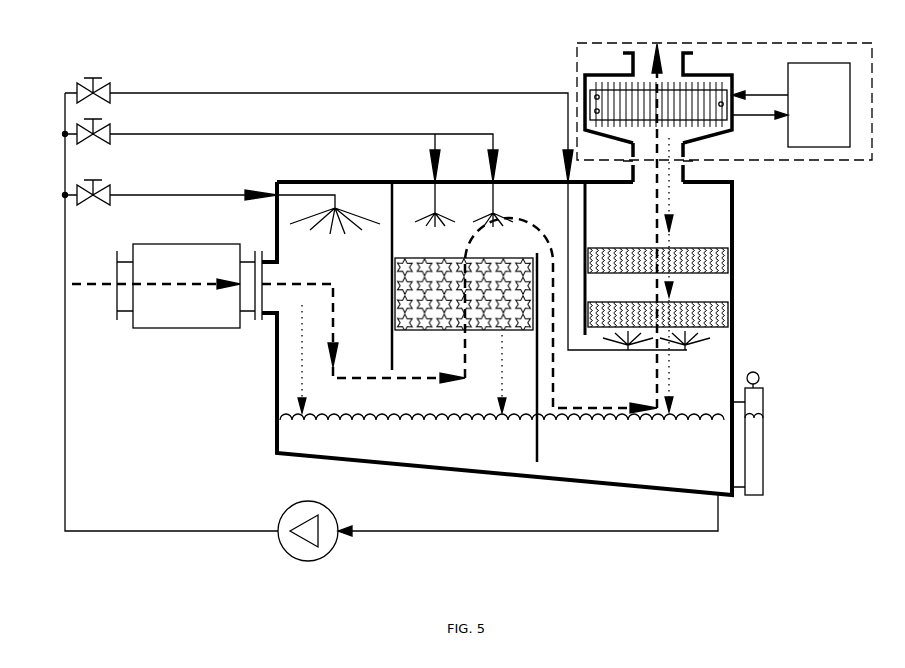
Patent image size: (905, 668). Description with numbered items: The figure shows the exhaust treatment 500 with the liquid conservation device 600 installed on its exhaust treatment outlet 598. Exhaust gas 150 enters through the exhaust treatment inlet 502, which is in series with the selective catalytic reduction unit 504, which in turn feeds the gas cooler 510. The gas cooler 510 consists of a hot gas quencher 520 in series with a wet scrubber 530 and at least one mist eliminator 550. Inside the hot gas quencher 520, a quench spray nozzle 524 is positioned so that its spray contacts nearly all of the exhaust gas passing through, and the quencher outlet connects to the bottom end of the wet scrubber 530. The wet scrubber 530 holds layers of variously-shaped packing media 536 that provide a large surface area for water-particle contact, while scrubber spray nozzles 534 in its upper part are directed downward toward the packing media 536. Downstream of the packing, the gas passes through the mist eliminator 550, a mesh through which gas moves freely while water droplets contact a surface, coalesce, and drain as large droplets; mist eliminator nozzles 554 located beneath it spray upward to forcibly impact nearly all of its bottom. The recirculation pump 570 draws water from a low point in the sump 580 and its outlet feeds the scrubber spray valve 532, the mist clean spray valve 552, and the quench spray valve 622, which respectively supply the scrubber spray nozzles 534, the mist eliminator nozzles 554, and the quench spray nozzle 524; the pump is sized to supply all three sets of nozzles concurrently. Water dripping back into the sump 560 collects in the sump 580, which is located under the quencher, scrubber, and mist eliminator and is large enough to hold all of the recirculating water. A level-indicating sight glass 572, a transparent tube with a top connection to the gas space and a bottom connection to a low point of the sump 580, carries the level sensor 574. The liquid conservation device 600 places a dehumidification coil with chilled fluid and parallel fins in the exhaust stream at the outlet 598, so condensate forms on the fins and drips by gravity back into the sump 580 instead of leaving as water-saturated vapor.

The exhaust treatment 500 is at (449, 55).
The exhaust gas 150 is at (98, 283).
The exhaust treatment inlet 502 is at (125, 318).
The selective catalytic reduction (SCR) 504 is at (187, 330).
The gas cooler 510 is at (303, 178).
The hot gas quencher 520 is at (349, 283).
The quench spray nozzle 524 is at (364, 173).
The wet scrubber 530 is at (420, 368).
The scrubber spray valve 532 is at (78, 126).
The scrubber spray nozzles 534 is at (492, 197).
The packing media 536 is at (452, 258).
The mist eliminator 550 is at (732, 250).
The mist clean spray valve 552 is at (78, 84).
The mist eliminator nozzles 554 is at (645, 352).
The water dripping back into sump 560 is at (305, 378).
The recirculation pump 570 is at (306, 500).
The level-indicating sight glass 572 is at (765, 440).
The level sensor 574 is at (760, 372).
The sump 580 is at (655, 475).
The exhaust treatment outlet 598 is at (690, 163).
The liquid conservation device 600 is at (805, 43).
The quench liquid valve 622 is at (78, 187).